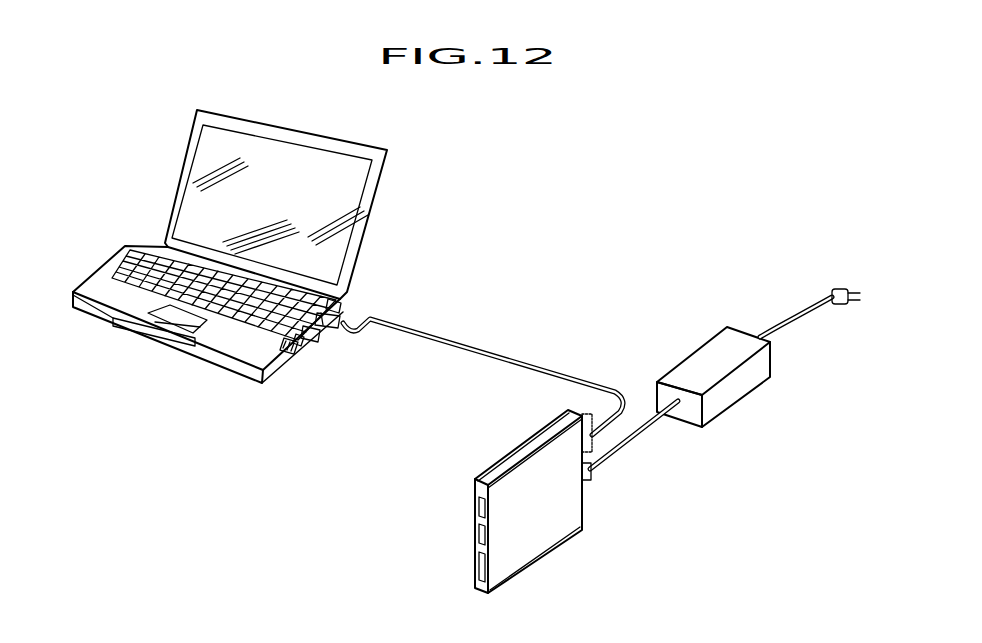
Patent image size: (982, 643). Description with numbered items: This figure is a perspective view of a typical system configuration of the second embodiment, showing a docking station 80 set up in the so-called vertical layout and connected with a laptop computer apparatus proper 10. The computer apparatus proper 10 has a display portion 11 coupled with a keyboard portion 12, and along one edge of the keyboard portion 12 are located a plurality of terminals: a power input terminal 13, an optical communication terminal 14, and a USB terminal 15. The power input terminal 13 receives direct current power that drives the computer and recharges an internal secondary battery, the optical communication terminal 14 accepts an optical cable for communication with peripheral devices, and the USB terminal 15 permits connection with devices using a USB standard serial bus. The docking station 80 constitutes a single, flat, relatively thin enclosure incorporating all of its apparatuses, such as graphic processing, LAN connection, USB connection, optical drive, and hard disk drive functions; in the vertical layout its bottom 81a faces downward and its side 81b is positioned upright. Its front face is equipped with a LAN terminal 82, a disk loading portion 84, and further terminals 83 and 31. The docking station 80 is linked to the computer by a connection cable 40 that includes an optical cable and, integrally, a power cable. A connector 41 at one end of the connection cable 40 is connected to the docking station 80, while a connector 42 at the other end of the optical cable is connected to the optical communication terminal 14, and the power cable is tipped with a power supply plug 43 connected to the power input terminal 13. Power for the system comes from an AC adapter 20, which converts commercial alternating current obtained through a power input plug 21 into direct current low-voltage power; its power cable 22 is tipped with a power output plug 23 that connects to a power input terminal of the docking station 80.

The computer apparatus proper 10 is at (307, 133).
The display portion 11 is at (337, 187).
The keyboard portion 12 is at (152, 266).
The power input terminal 13 is at (340, 306).
The optical communication terminal 14 is at (300, 348).
The USB terminal 15 is at (292, 353).
The AC adapter 20 is at (737, 398).
The power input plug 21 is at (840, 290).
The power cable 22 is at (643, 435).
The power output plug 23 is at (592, 466).
The connector 31 is at (532, 440).
The connection cable 40 is at (456, 330).
The connector 41 is at (584, 418).
The connector 42 is at (318, 338).
The power supply plug 43 is at (340, 316).
The docking station 80 is at (540, 522).
The bottom 81a is at (515, 577).
The side 81b is at (476, 478).
The LAN terminal 82 is at (476, 490).
The connector 83 is at (476, 530).
The disk loading portion 84 is at (476, 578).